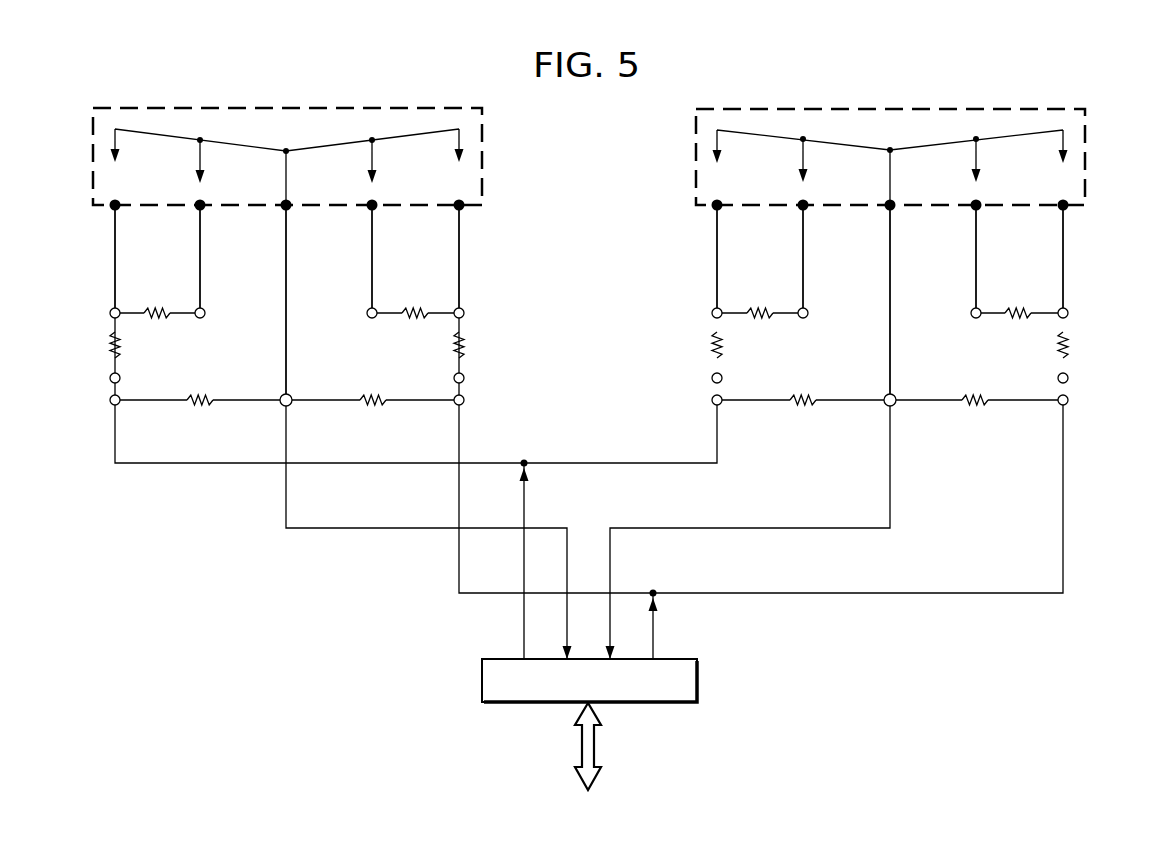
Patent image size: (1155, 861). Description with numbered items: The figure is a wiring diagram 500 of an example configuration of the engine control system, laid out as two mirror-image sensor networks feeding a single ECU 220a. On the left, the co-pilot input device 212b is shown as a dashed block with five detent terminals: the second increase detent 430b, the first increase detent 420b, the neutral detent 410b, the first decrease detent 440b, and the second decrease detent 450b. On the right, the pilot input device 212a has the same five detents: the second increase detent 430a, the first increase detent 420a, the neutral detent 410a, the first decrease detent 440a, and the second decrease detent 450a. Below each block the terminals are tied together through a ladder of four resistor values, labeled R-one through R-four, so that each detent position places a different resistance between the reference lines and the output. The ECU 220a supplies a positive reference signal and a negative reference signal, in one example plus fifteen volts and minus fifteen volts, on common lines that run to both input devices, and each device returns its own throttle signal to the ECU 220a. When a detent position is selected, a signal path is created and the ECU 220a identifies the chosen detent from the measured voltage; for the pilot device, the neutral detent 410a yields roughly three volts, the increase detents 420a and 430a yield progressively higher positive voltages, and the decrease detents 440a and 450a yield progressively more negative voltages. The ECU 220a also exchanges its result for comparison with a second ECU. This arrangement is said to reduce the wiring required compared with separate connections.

The wiring diagram 500 is at (427, 62).
The co-pilot input device 212b is at (175, 108).
The pilot input device 212a is at (1005, 108).
The second increase detent 430b is at (110, 213).
The first increase detent 420b is at (195, 213).
The neutral detent 410b is at (281, 213).
The first decrease detent 440b is at (367, 213).
The second decrease detent 450b is at (454, 213).
The second increase detent 430a is at (723, 213).
The first increase detent 420a is at (809, 213).
The neutral detent 410a is at (896, 213).
The first decrease detent 440a is at (982, 213).
The second decrease detent 450a is at (1069, 213).
The ECU 220a is at (482, 690).